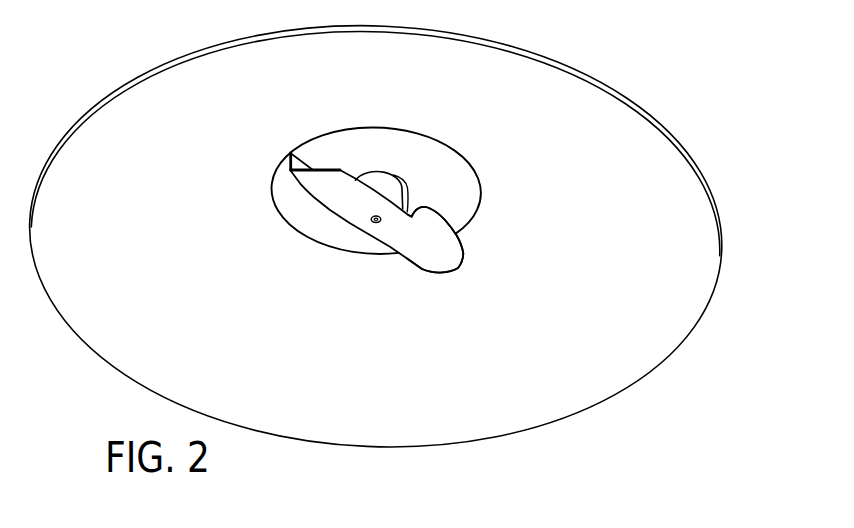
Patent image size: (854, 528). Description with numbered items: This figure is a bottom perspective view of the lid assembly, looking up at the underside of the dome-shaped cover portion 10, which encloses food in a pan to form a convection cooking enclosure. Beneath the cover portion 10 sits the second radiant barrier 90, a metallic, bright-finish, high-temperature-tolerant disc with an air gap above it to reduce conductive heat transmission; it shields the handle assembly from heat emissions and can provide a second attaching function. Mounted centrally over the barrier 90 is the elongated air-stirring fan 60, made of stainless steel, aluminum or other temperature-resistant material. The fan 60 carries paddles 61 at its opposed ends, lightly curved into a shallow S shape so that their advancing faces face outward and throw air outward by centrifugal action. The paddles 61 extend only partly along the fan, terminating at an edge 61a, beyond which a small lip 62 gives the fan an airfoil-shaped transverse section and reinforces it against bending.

The cover portion 10 is at (645, 155).
The second radiant barrier 90 is at (452, 178).
The fan 60 is at (320, 187).
The paddles 61 is at (295, 163).
The edge 61a is at (423, 207).
The lip 62 is at (342, 169).